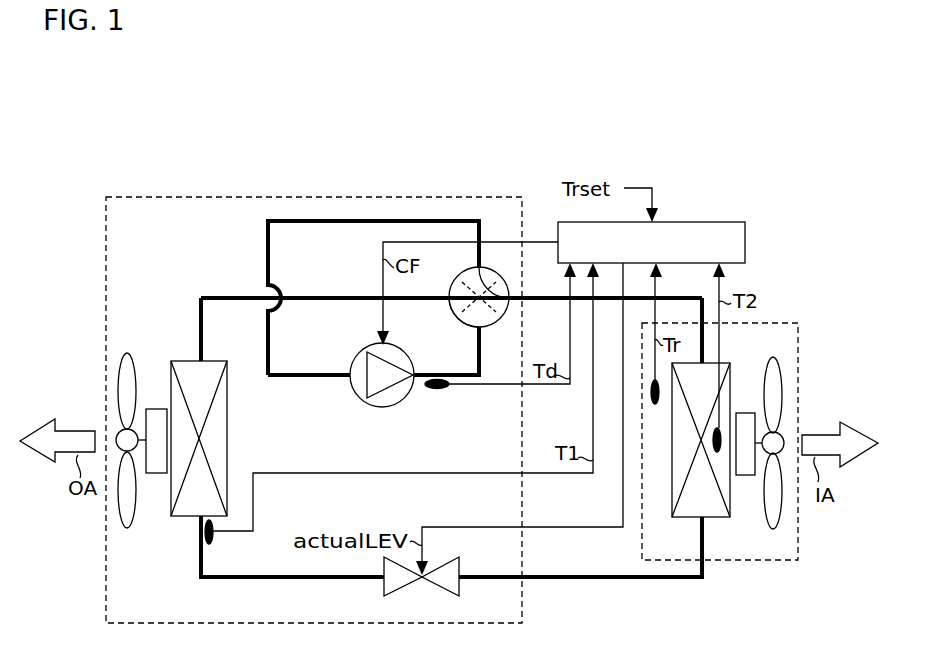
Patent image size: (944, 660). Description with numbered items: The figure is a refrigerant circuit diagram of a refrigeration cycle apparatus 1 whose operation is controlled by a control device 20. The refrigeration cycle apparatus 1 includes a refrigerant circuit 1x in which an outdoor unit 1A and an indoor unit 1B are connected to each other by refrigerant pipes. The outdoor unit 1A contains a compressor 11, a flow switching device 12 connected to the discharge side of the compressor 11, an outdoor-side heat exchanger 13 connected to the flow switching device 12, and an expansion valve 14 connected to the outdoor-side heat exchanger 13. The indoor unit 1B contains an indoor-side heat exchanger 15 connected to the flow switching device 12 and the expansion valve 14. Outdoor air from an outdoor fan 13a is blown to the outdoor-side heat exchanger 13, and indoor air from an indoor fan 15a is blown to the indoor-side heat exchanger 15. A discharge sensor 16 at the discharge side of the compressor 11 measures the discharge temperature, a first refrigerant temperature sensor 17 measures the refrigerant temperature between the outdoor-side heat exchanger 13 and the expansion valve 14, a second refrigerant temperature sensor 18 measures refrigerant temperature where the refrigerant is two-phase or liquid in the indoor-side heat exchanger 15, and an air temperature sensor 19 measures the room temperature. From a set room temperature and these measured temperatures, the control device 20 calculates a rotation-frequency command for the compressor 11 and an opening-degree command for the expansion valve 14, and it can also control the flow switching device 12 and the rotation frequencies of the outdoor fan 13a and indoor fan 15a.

The refrigeration cycle apparatus 1 is at (218, 182).
The outdoor unit 1A is at (415, 197).
The indoor unit 1B is at (792, 323).
The refrigerant circuit 1x is at (194, 290).
The compressor 11 is at (359, 353).
The flow switching device 12 is at (461, 322).
The outdoor-side heat exchanger 13 is at (228, 438).
The outdoor fan 13a is at (118, 393).
The expansion valve 14 is at (422, 580).
The indoor-side heat exchanger 15 is at (716, 519).
The indoor fan 15a is at (782, 387).
The discharge sensor 16 is at (436, 389).
The first refrigerant temperature sensor 17 is at (213, 543).
The second refrigerant temperature sensor 18 is at (719, 452).
The air temperature sensor 19 is at (655, 404).
The control device 20 is at (747, 245).